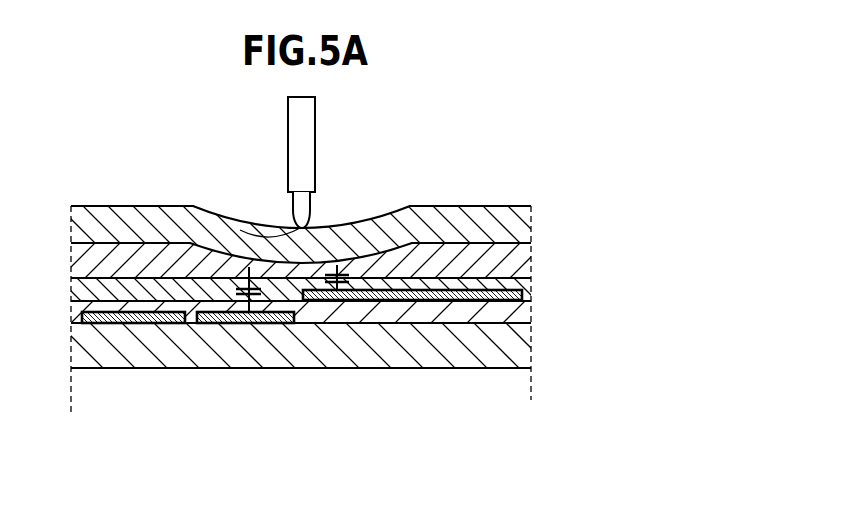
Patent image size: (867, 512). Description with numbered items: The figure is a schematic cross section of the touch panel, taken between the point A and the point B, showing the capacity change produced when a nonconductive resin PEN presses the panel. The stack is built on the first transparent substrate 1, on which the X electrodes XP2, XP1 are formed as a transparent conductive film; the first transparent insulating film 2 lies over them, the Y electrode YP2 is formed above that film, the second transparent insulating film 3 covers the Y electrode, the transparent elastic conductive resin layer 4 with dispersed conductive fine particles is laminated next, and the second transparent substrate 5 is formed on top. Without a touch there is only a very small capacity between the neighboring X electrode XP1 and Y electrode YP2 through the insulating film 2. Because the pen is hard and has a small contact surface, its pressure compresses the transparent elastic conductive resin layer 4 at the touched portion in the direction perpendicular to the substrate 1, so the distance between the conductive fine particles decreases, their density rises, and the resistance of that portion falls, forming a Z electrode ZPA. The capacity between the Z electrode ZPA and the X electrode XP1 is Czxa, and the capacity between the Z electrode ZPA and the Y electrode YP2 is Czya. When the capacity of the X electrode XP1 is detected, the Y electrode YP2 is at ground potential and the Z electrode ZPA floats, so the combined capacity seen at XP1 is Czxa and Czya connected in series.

The first transparent substrate 1 is at (522, 340).
The first transparent insulating film 2 is at (522, 313).
The second transparent insulating film 3 is at (522, 288).
The transparent elastic conductive resin layer 4 is at (522, 263).
The second transparent substrate 5 is at (522, 228).
The X electrode XP2 is at (140, 323).
The X electrode XP1 is at (270, 323).
The Y electrode YP2 is at (448, 302).
The capacity between Z electrode and X electrode Czxa is at (228, 293).
The capacity between Z electrode and Y electrode Czya is at (370, 302).
The Z electrode ZPA is at (265, 272).
The nonconductive pen PEN is at (316, 141).
The point A is at (69, 425).
The point B is at (529, 421).